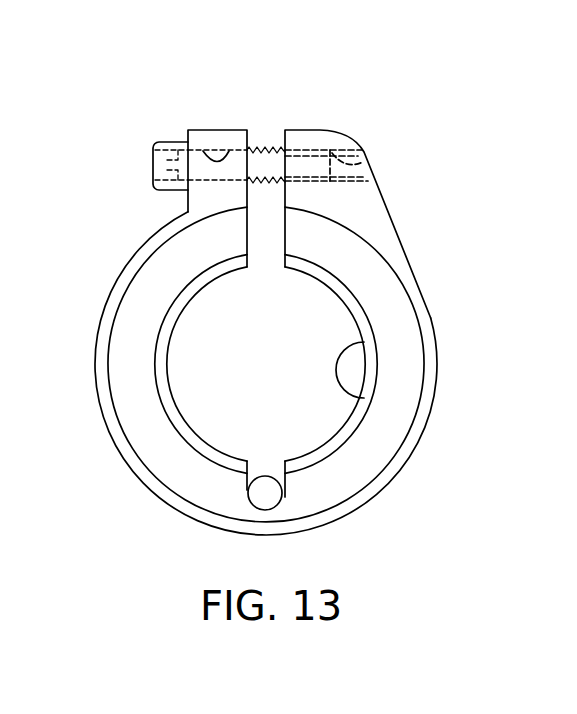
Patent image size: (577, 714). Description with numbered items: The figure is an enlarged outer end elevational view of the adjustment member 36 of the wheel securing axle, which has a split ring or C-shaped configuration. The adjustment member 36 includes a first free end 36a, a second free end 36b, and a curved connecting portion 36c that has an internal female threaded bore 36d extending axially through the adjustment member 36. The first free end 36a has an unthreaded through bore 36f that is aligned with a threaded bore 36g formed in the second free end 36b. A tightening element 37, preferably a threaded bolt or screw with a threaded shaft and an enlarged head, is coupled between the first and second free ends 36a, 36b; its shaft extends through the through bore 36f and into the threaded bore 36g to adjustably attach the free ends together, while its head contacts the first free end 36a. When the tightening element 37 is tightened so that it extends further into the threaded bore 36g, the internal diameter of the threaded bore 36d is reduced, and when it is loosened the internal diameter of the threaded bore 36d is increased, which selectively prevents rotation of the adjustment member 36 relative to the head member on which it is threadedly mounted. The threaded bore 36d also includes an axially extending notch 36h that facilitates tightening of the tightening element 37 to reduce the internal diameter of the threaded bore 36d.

The adjustment member 36 is at (293, 325).
The first free end 36a is at (208, 198).
The second free end 36b is at (352, 205).
The curved connecting portion 36c is at (333, 482).
The threaded bore 36d is at (350, 395).
The through bore 36f is at (231, 150).
The threaded bore 36g is at (366, 160).
The axially extending notch 36h is at (243, 483).
The tightening element 37 is at (163, 135).